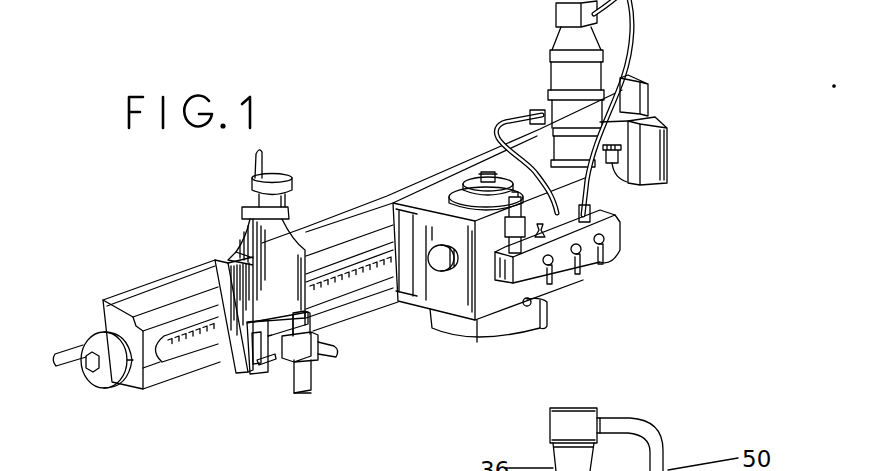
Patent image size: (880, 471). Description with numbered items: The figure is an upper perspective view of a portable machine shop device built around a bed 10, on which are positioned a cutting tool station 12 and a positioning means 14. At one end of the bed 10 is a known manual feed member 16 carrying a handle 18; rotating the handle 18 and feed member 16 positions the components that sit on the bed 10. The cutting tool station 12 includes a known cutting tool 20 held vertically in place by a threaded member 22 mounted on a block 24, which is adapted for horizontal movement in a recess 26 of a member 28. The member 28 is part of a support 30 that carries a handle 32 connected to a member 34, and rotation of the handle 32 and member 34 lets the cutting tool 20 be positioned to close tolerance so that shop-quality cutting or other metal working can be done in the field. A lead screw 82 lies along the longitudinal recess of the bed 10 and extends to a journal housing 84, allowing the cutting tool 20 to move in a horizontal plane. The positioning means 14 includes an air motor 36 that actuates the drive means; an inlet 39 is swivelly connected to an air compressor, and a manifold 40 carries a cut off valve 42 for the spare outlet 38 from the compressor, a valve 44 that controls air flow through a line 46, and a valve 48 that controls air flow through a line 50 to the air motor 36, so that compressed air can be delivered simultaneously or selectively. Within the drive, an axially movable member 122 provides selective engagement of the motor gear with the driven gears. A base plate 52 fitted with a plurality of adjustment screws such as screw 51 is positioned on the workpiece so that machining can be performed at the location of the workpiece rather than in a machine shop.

The bed 10 is at (128, 280).
The cutting tool station 12 is at (241, 385).
The positioning means 14 is at (600, 188).
The manual feed member 16 is at (103, 377).
The handle 18 is at (70, 347).
The cutting tool 20 is at (311, 376).
The threaded member 22 is at (339, 353).
The block 24 is at (318, 334).
The recess 26 is at (258, 347).
The member 28 is at (268, 368).
The support 30 is at (222, 266).
The handle 32 is at (264, 156).
The member 34 is at (292, 181).
The air motor 36 is at (557, 68).
The spare outlet 38 is at (613, 213).
The inlet 39 is at (496, 198).
The manifold 40 is at (617, 238).
The cut off valve 42 is at (556, 269).
The valve 44 is at (582, 257).
The line 46 is at (500, 130).
The valve 48 is at (615, 259).
The line 50 is at (633, 29).
The adjustment screw 51 is at (533, 305).
The base plate 52 is at (472, 340).
The lead screw 82 is at (168, 344).
The journal housing 84 is at (657, 155).
The member 122 is at (667, 127).